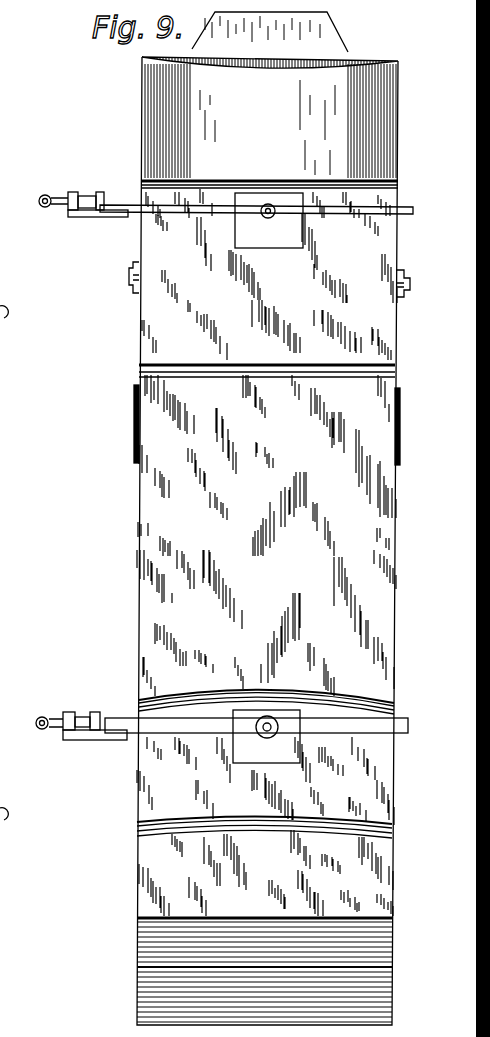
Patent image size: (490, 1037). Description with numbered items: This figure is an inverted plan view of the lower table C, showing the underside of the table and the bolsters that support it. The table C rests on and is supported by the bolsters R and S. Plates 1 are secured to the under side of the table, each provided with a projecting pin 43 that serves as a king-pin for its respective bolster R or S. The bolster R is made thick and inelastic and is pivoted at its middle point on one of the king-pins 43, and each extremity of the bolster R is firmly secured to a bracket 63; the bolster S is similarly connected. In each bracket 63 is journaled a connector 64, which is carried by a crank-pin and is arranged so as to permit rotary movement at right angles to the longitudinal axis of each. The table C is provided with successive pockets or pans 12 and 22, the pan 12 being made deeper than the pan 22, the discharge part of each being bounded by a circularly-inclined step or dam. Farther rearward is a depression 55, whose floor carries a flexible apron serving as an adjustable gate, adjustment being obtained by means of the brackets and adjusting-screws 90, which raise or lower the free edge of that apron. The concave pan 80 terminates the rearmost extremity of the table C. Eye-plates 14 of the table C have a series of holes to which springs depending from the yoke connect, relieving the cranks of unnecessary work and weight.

The concave pan 80 is at (270, 100).
The depression 55 is at (268, 275).
The bolster S is at (125, 206).
The bolster R is at (110, 717).
The connector 64 is at (44, 176).
The bracket 63 is at (92, 218).
The projecting pin 43 is at (262, 213).
The plate 1 is at (268, 478).
The brackets and adjusting-screws 90 is at (133, 292).
The eye-plate 14 is at (135, 425).
The pan 22 is at (176, 783).
The pan 12 is at (223, 873).
The lower table C is at (267, 541).